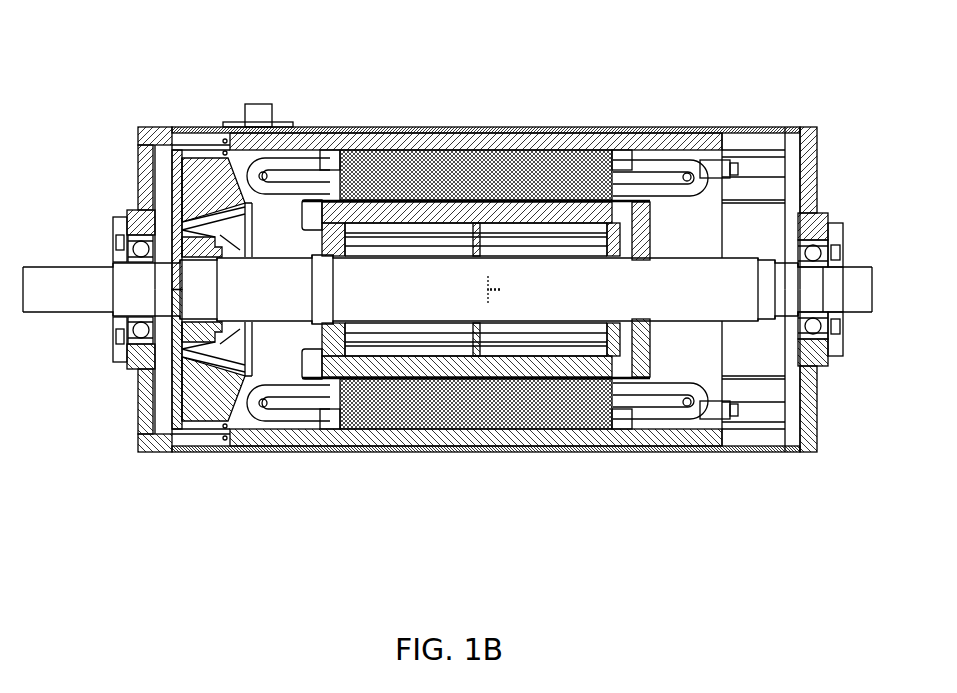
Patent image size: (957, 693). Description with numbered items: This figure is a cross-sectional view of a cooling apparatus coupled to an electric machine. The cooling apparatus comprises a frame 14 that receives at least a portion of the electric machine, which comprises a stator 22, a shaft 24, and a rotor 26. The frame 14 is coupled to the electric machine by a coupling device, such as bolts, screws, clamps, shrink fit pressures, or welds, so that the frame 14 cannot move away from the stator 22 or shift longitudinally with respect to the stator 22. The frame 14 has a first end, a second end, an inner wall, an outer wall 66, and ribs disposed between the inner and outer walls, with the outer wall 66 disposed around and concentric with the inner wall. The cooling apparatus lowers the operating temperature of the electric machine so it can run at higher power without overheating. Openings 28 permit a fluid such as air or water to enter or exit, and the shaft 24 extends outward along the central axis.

The frame 14 is at (559, 93).
The outer wall 66 is at (410, 126).
The openings 28 is at (257, 112).
The stator 22 is at (547, 400).
The rotor 26 is at (392, 368).
The shaft 24 is at (52, 292).